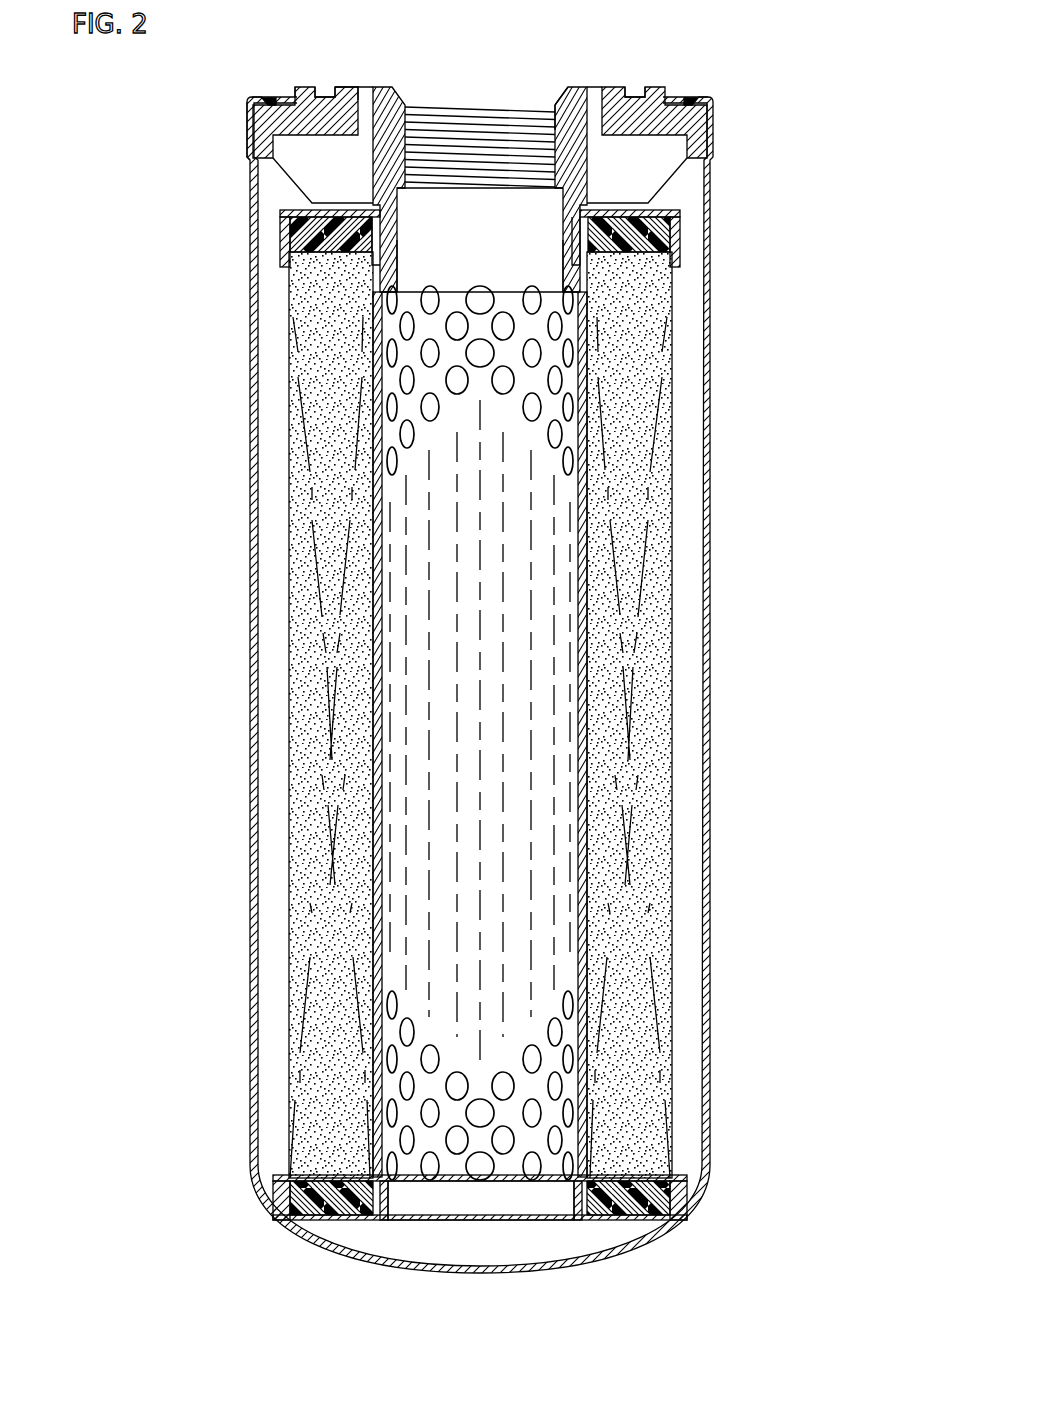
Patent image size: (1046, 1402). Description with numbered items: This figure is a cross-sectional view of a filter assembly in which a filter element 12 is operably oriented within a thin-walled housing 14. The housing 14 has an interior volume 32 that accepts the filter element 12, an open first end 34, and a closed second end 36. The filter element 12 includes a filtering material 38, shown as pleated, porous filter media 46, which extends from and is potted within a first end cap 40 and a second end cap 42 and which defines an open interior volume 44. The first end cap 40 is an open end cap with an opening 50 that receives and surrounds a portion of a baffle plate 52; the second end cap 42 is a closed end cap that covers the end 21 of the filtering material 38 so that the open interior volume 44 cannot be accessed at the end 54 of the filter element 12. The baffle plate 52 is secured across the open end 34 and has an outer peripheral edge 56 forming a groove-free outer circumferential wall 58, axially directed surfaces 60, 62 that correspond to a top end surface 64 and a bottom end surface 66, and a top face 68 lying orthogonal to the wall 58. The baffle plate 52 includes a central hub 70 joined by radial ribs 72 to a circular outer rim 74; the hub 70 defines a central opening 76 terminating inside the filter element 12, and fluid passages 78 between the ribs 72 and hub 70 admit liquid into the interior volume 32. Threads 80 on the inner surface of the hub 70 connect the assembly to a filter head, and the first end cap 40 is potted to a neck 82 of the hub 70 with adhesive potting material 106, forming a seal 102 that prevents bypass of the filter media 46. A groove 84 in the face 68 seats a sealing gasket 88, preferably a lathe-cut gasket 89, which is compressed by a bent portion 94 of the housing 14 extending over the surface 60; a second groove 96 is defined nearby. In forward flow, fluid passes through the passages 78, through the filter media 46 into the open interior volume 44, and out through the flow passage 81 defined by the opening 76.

The filter element 12 is at (270, 722).
The housing 14 is at (250, 479).
The end of the filtering material 21 is at (312, 1177).
The interior volume 32 is at (700, 970).
The open first end 34 is at (281, 94).
The closed second end 36 is at (535, 1275).
The filtering material 38 is at (305, 933).
The first end cap 40 is at (280, 243).
The second end cap 42 is at (313, 1222).
The open interior volume 44 is at (580, 551).
The filter media 46 is at (668, 652).
The opening 50 is at (383, 233).
The baffle plate 52 is at (362, 87).
The end of the filter element 54 is at (637, 1222).
The outer peripheral edge 56 is at (247, 115).
The outer circumferential wall 58 is at (252, 147).
The axially directed surface 60 is at (327, 85).
The axially directed surface 62 is at (280, 217).
The top end surface 64 is at (350, 85).
The bottom end surface 66 is at (677, 217).
The top face 68 is at (582, 86).
The hub 70 is at (562, 97).
The radial webs or ribs 72 is at (617, 176).
The outer rim 74 is at (695, 127).
The central opening 76 is at (407, 107).
The fluid passages 78 is at (662, 173).
The threads 80 is at (477, 107).
The flow passage 81 is at (565, 263).
The neck 82 is at (397, 263).
The groove 84 is at (252, 94).
The sealing gasket 88 is at (700, 97).
The lathe-cut gasket 89 is at (267, 99).
The bent portion 94 is at (684, 95).
The second groove 96 is at (635, 90).
The seal 102 is at (578, 230).
The adhesive potting material 106 is at (657, 245).